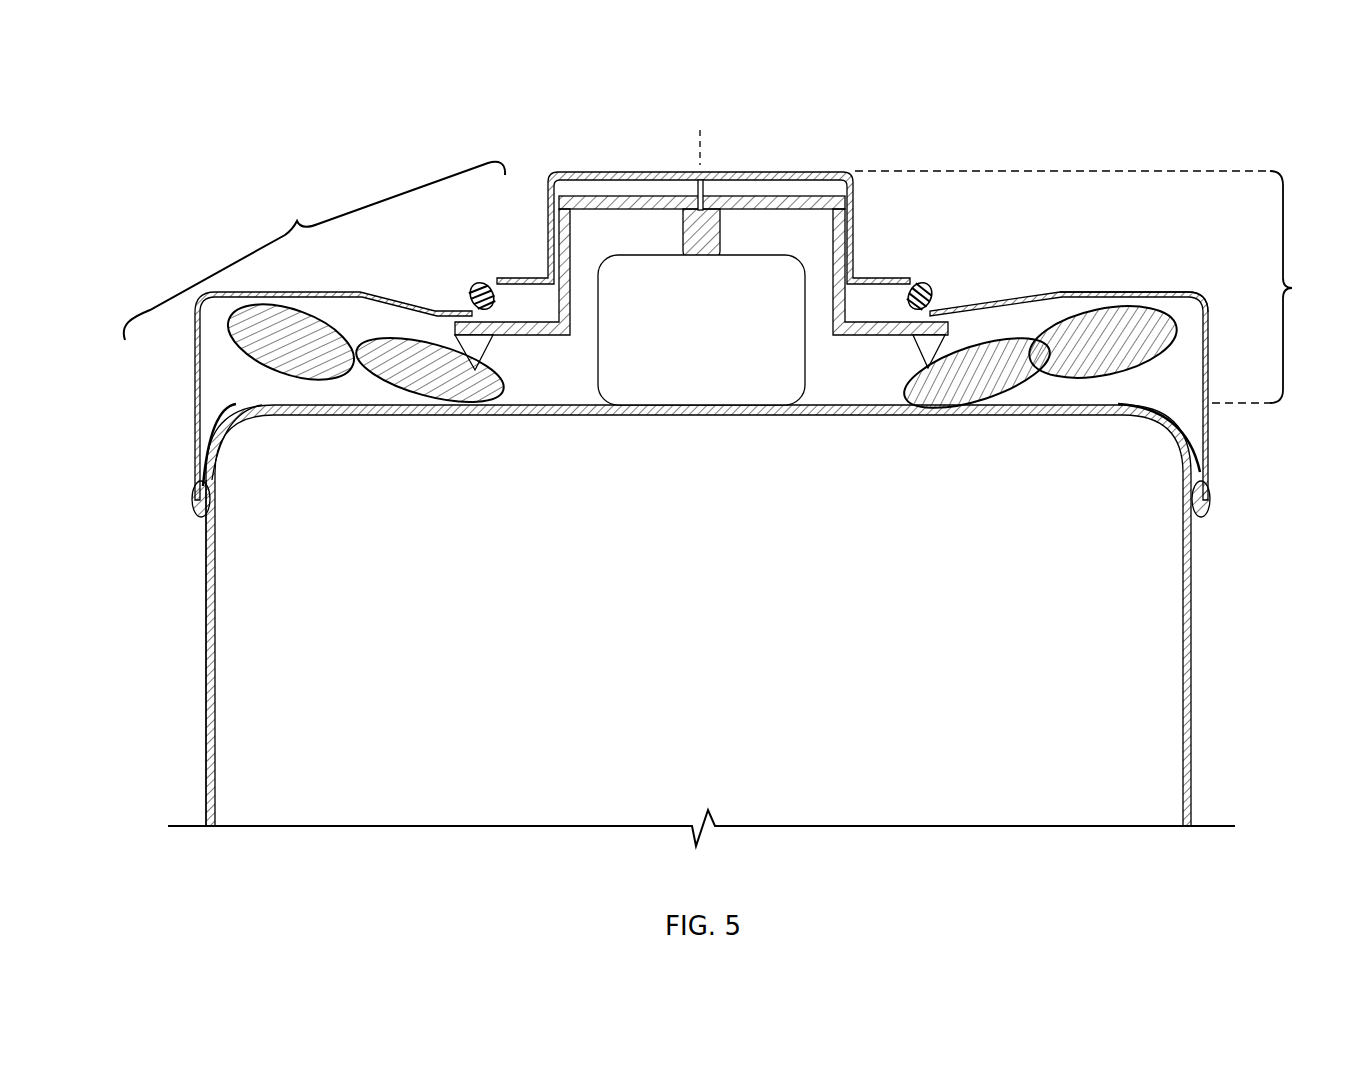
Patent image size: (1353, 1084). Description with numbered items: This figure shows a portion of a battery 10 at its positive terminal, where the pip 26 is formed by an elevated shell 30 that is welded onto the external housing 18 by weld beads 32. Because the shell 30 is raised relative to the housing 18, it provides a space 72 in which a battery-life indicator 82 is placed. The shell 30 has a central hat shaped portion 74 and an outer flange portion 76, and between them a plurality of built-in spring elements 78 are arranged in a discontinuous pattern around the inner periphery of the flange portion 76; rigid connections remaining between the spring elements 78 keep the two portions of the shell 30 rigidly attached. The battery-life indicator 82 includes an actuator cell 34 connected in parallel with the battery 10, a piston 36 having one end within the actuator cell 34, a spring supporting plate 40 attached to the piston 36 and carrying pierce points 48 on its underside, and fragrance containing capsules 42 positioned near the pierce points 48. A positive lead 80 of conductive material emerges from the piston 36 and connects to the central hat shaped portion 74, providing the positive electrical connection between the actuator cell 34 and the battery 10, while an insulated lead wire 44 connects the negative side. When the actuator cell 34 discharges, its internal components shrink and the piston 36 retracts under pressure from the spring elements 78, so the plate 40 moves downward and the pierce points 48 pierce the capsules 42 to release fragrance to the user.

The battery 10 is at (192, 100).
The housing 18 is at (1191, 603).
The pip 26 is at (571, 178).
The elevated shell 30 is at (314, 251).
The weld beads 32 is at (193, 490).
The actuator cell 34 is at (747, 393).
The piston 36 is at (712, 220).
The spring supporting plate 40 is at (787, 197).
The fragrance containing capsules 42 is at (1133, 310).
The insulated lead wire 44 is at (206, 660).
The pierce points 48 is at (460, 348).
The space 72 is at (1196, 308).
The central hat shaped portion 74 is at (548, 221).
The outer flange portion 76 is at (197, 387).
The spring elements 78 is at (477, 287).
The positive lead 80 is at (697, 186).
The battery-life indicator 82 is at (1092, 287).